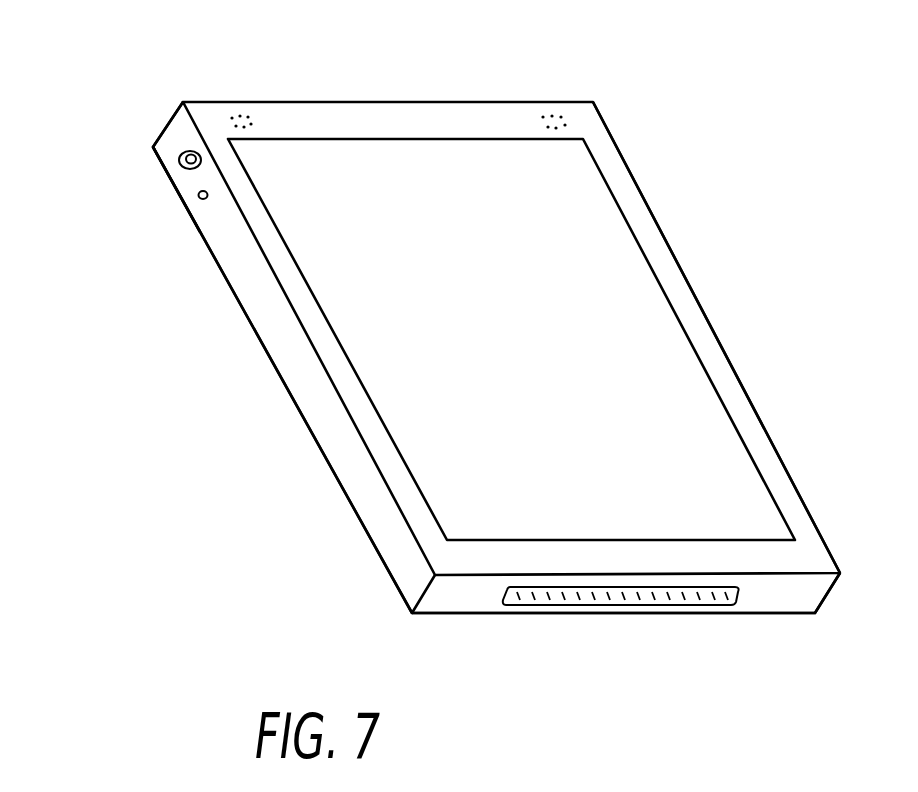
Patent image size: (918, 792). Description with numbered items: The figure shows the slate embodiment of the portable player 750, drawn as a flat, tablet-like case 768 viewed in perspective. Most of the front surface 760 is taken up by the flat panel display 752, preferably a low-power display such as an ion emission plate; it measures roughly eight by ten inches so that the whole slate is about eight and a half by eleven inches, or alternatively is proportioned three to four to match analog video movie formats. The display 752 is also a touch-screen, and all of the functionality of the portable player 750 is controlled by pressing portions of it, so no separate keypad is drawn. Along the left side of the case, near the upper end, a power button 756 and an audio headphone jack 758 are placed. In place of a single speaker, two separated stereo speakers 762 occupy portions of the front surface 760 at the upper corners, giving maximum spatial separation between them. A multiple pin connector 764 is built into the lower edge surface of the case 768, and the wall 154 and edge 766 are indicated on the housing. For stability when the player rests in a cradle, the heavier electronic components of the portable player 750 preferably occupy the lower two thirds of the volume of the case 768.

The portable player 750 is at (660, 120).
The flat panel display 752 is at (480, 260).
The housing side wall 154 is at (170, 127).
The power button 756 is at (180, 158).
The audio headphone jack 758 is at (197, 196).
The front surface 760 is at (685, 310).
The stereo speakers 762 is at (238, 115).
The multiple pin connector 764 is at (528, 597).
The front edge 766 is at (797, 603).
The case 768 is at (373, 517).